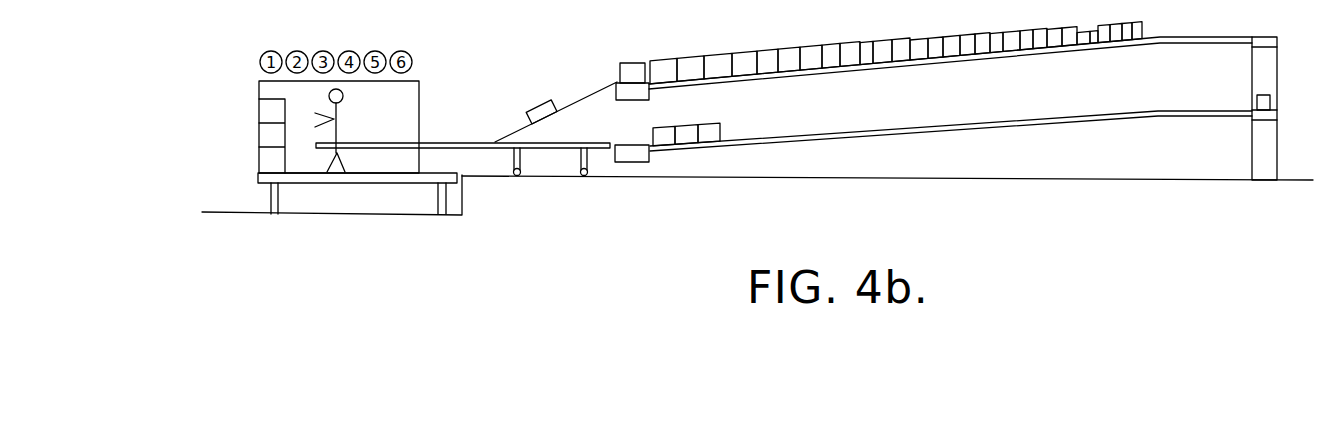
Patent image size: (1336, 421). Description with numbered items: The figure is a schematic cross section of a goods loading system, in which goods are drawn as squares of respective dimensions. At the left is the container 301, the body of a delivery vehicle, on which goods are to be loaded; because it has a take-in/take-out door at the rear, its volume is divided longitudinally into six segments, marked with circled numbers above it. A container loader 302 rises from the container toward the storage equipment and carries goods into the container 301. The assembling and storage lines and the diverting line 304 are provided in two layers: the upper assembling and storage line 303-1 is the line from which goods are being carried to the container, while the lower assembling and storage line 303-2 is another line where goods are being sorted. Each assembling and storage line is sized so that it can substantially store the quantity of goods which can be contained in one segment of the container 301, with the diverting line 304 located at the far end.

The container 301 is at (258, 120).
The container loader 302 is at (580, 99).
The assembling and storage line 303-1 is at (903, 38).
The assembling and storage line 303-2 is at (907, 127).
The diverting line 304 is at (1278, 97).